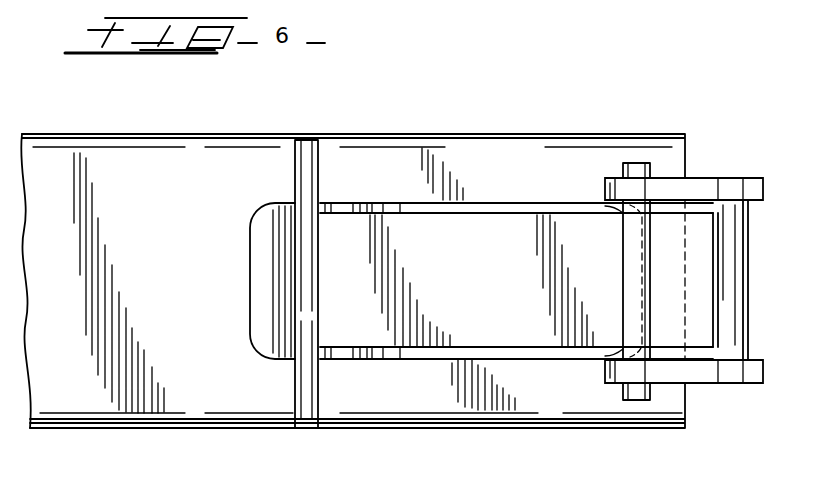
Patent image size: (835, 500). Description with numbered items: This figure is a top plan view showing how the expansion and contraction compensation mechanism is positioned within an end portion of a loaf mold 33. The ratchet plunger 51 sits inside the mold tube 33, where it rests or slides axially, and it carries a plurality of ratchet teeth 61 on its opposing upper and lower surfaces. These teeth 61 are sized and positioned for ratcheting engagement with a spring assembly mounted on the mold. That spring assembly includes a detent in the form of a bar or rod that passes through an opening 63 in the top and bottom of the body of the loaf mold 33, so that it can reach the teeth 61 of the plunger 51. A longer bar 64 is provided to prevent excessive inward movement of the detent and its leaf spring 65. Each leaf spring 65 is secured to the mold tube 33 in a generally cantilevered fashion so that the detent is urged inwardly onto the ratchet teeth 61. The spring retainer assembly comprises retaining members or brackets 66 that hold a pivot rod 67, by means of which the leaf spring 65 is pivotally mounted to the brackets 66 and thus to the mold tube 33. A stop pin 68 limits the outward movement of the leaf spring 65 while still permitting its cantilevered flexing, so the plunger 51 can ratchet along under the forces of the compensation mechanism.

The loaf mold 33 is at (132, 202).
The ratchet plunger 51 is at (281, 218).
The ratchet teeth 61 is at (367, 207).
The opening 63 is at (448, 205).
The longer bar 64 is at (310, 158).
The leaf spring 65 is at (503, 287).
The retaining brackets 66 is at (700, 188).
The pivot rod 67 is at (733, 310).
The stop pin 68 is at (638, 397).